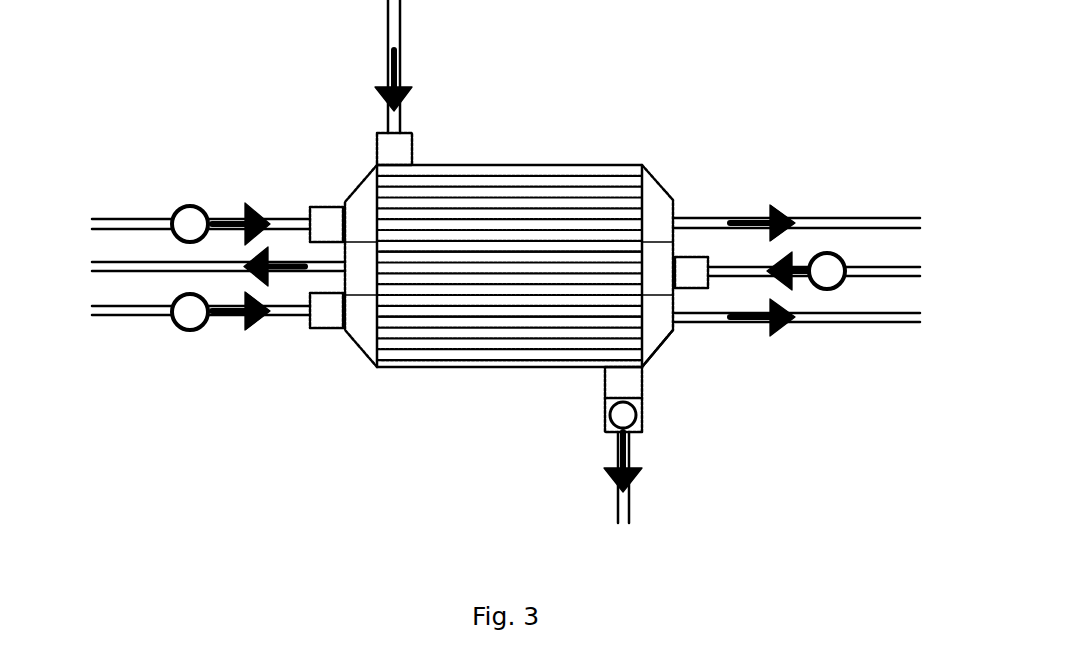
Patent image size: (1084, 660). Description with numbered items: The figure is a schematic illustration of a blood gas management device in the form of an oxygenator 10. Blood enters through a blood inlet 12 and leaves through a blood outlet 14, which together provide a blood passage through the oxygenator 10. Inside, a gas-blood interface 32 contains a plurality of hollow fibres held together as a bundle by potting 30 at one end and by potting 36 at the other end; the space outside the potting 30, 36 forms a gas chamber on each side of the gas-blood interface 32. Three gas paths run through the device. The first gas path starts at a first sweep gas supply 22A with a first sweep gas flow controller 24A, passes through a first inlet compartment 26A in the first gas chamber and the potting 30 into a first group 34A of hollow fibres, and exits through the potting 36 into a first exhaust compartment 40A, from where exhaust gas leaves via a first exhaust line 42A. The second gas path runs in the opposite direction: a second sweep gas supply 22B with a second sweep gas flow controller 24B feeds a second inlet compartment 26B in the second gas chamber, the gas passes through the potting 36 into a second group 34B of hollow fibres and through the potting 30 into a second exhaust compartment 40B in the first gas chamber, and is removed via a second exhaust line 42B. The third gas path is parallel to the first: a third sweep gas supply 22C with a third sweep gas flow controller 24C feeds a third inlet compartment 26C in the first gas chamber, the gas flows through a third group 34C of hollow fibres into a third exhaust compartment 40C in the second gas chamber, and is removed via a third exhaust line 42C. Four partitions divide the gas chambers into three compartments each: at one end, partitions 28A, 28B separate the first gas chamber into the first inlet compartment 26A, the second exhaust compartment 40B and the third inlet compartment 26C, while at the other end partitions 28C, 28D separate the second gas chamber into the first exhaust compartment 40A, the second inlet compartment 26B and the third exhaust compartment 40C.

The oxygenator 10 is at (782, 109).
The blood inlet 12 is at (386, 58).
The blood outlet 14 is at (617, 499).
The first sweep gas supply 22A is at (133, 219).
The second sweep gas supply 22B is at (767, 278).
The third sweep gas supply 22C is at (115, 318).
The first sweep gas flow controller 24A is at (190, 204).
The second sweep gas flow controller 24B is at (827, 290).
The third sweep gas flow controller 24C is at (190, 331).
The first inlet compartment 26A is at (343, 202).
The second inlet compartment 26B is at (652, 250).
The third inlet compartment 26C is at (350, 332).
The partition 28A is at (357, 212).
The partition 28B is at (357, 322).
The partition 28C is at (645, 240).
The partition 28D is at (648, 355).
The potting 30 is at (512, 266).
The gas-blood interface 32 is at (593, 165).
The first group of hollow fibres 34A is at (455, 192).
The second group of hollow fibres 34B is at (475, 255).
The third group of hollow fibres 34C is at (515, 320).
The potting 36 is at (641, 320).
The first exhaust compartment 40A is at (662, 200).
The second exhaust compartment 40B is at (268, 314).
The third exhaust compartment 40C is at (650, 352).
The first exhaust line 42A is at (897, 218).
The second exhaust line 42B is at (219, 272).
The third exhaust line 42C is at (902, 323).